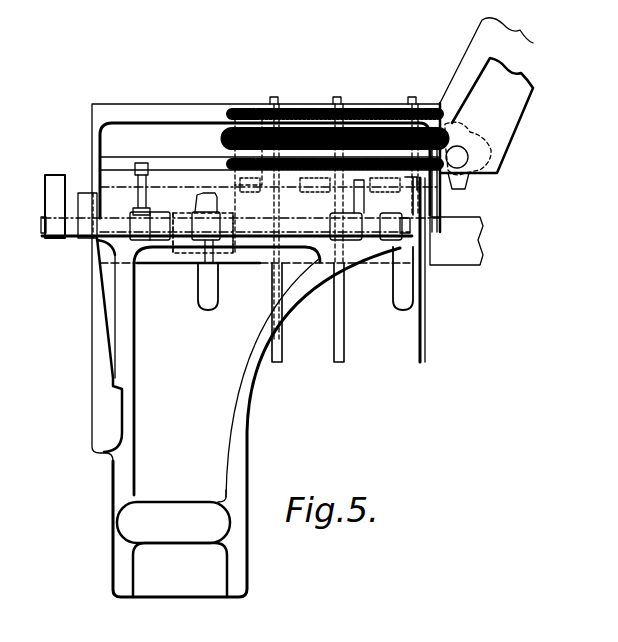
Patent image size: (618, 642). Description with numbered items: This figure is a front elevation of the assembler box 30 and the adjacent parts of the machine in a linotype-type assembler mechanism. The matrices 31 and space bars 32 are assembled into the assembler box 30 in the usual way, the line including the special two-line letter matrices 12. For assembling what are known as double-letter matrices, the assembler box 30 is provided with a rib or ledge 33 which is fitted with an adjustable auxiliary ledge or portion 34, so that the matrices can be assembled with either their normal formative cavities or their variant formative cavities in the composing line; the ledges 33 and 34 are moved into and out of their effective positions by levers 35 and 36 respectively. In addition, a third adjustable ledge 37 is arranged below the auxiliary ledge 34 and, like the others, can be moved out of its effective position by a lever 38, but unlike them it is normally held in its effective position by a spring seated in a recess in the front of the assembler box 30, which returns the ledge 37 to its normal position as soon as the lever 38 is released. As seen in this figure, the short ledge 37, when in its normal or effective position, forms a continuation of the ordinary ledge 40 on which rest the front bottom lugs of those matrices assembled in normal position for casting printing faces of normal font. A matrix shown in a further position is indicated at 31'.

The 2-line letter matrix 12 is at (233, 112).
The assembler box 30 is at (250, 378).
The matrix 31 is at (207, 192).
The collar 31' is at (349, 210).
The space bar 32 is at (413, 332).
The rib or ledge 33 is at (263, 173).
The adjustable auxiliary ledge 34 is at (418, 104).
The lever 35 is at (200, 289).
The lever 36 is at (393, 289).
The third adjustable ledge 37 is at (427, 189).
The lever 38 is at (423, 288).
The ordinary ledge 40 is at (112, 187).